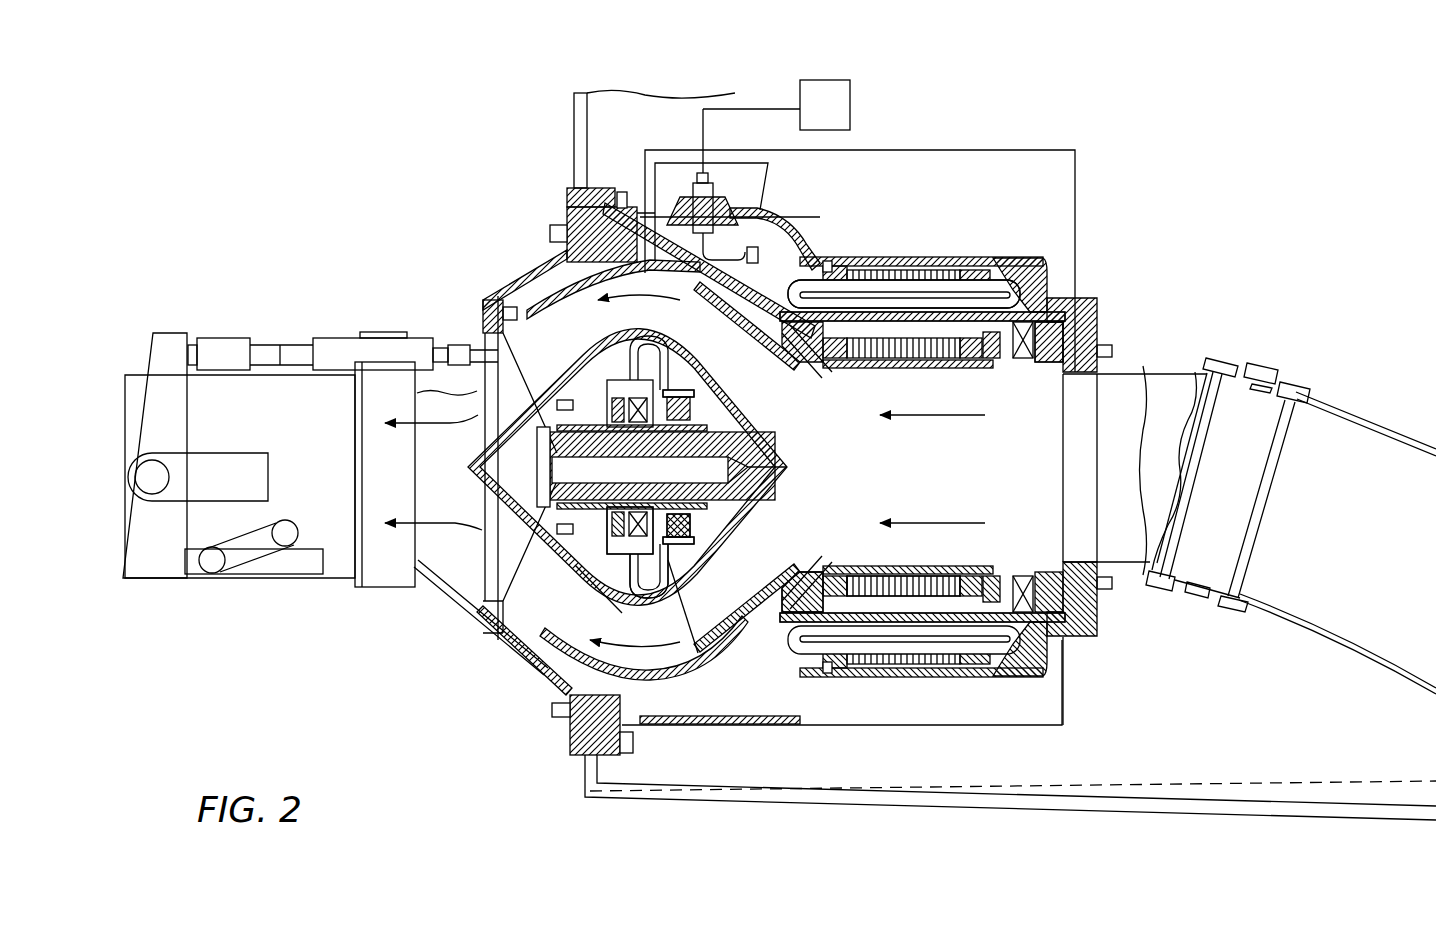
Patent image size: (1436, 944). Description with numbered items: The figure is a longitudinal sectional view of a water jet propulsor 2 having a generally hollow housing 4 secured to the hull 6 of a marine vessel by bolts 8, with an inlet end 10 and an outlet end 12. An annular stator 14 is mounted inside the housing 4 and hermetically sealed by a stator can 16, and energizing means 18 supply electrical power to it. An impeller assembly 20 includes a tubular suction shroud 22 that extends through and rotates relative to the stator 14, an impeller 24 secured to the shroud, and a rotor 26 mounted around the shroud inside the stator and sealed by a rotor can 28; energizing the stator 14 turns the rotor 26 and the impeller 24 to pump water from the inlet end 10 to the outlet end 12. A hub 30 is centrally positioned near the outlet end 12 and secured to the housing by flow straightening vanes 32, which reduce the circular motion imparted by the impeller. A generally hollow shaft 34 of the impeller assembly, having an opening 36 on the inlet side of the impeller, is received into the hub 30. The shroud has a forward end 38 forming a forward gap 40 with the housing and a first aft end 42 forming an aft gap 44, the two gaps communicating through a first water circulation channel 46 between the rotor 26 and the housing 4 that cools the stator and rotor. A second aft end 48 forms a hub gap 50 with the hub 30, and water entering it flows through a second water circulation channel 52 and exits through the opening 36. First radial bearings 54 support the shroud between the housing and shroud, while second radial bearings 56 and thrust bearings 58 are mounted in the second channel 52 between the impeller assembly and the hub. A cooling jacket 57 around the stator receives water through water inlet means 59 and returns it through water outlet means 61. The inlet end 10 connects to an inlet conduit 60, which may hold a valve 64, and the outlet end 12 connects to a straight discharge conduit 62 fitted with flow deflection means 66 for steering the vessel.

The water jet propulsor 2 is at (958, 150).
The housing 4 is at (1062, 310).
The hull 6 is at (577, 152).
The bolts 8 is at (622, 196).
The inlet end 10 is at (1040, 422).
The outlet end 12 is at (487, 378).
The annular stator 14 is at (948, 275).
The stator can 16 is at (885, 312).
The energizing means 18 is at (838, 118).
The impeller assembly 20 is at (1042, 310).
The tubular suction shroud 22 is at (950, 570).
The impeller 24 is at (762, 400).
The rotor 26 is at (905, 582).
The rotor can 28 is at (808, 612).
The hub 30 is at (485, 497).
The flow straightening vanes 32 is at (520, 290).
The hollow shaft 34 is at (715, 435).
The opening 36 is at (792, 468).
The forward end 38 is at (1125, 385).
The forward gap 40 is at (1062, 567).
The first aft end 42 is at (750, 343).
The aft gap 44 is at (795, 640).
The first water circulation channel 46 is at (775, 325).
The second aft end 48 is at (700, 580).
The hub gap 50 is at (685, 590).
The second water circulation channel 52 is at (655, 612).
The first radial bearings 54 is at (1040, 365).
The second radial bearings 56 is at (695, 437).
The cooling jacket 57 is at (1013, 150).
The thrust bearings 58 is at (610, 385).
The water inlet means 59 is at (688, 160).
The inlet conduit 60 is at (1148, 372).
The water outlet means 61 is at (1090, 622).
The discharge conduit 62 is at (425, 582).
The valve 64 is at (1270, 365).
The flow deflection means 66 is at (167, 352).